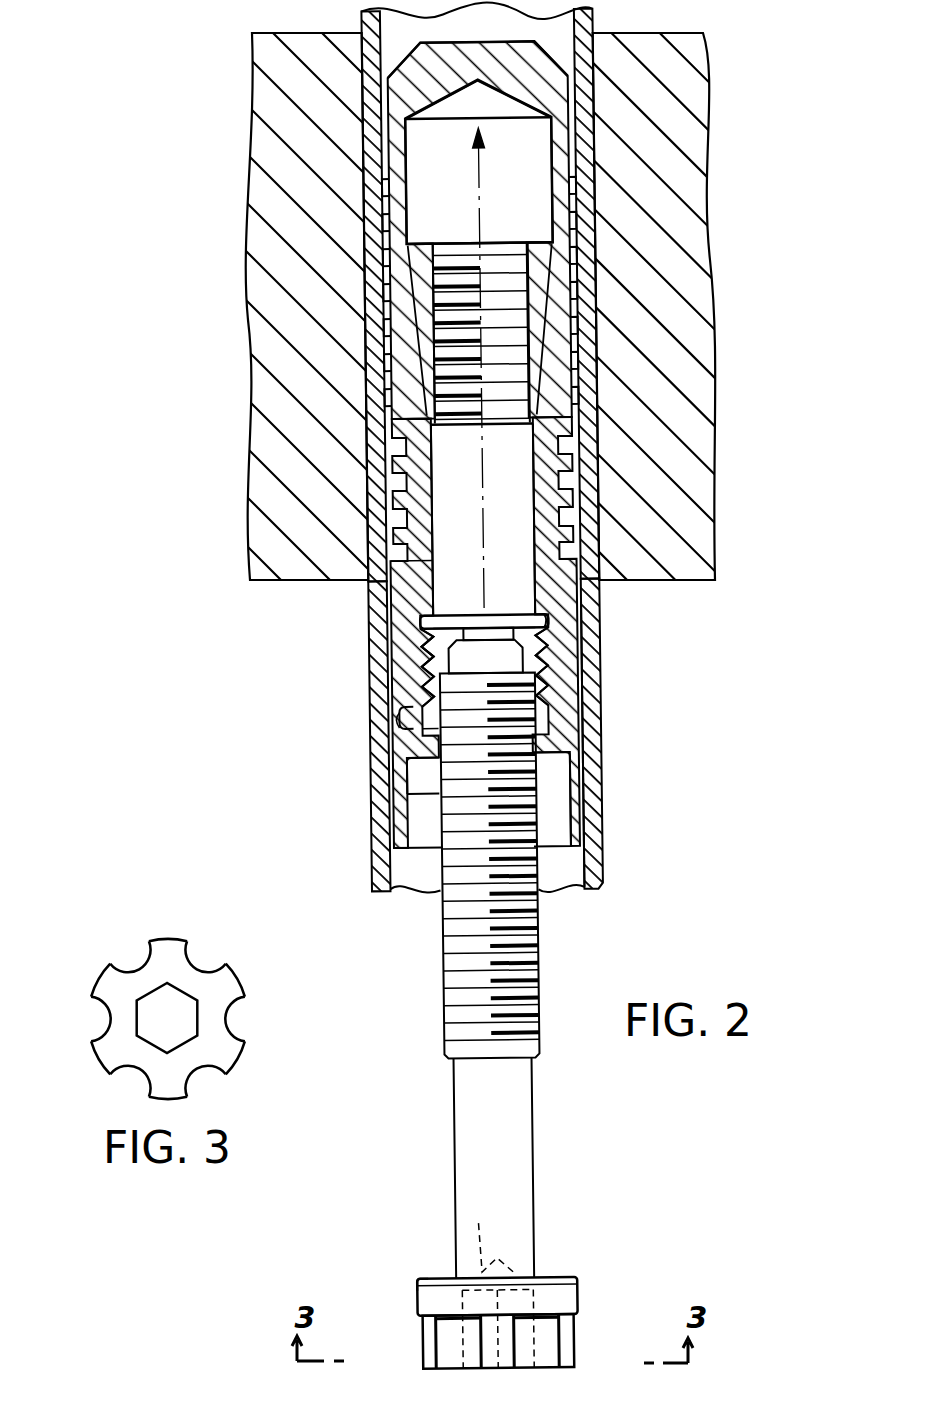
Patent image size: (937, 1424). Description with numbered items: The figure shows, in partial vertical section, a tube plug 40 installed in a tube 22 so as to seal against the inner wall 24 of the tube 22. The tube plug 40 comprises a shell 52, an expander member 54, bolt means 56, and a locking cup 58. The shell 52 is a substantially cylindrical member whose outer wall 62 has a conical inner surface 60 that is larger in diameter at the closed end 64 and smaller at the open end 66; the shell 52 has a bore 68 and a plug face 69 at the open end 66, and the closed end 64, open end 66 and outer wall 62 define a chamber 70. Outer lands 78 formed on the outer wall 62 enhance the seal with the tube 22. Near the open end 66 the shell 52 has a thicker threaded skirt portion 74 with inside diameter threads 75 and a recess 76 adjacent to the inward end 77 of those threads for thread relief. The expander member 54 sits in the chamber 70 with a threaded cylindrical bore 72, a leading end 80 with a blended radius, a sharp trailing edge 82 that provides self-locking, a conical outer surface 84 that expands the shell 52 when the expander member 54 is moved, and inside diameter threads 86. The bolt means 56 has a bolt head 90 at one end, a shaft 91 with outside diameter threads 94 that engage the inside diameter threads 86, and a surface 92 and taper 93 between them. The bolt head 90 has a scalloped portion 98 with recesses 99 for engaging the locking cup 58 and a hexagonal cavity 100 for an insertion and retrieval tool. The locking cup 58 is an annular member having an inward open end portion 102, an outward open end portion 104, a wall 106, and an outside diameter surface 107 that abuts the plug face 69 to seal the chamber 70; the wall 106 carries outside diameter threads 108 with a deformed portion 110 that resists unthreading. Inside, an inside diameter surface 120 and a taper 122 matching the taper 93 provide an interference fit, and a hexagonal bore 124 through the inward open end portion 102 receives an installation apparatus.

In FIG. 2, the tube 22 is at (605, 858).
In FIG. 2, the inner wall 24 is at (580, 863).
In FIG. 2, the tube plug 40 is at (725, 94).
In FIG. 2, the shell 52 is at (464, 42).
In FIG. 2, the expander member 54 is at (552, 246).
In FIG. 2, the bolt means 56 is at (526, 1129).
In FIG. 3, the bolt means 56 is at (98, 1062).
In FIG. 2, the locking cup 58 is at (560, 738).
In FIG. 2, the conical inner surface 60 is at (416, 169).
In FIG. 2, the outer wall 62 is at (389, 96).
In FIG. 2, the closed end 64 is at (405, 69).
In FIG. 2, the open end 66 is at (406, 686).
In FIG. 2, the bore 68 is at (463, 552).
In FIG. 2, the plug face 69 is at (401, 727).
In FIG. 2, the chamber 70 is at (453, 509).
In FIG. 2, the threaded cylindrical bore 72 is at (518, 428).
In FIG. 2, the skirt portion 74 is at (577, 608).
In FIG. 2, the inside diameter threads 75 is at (547, 623).
In FIG. 2, the recess 76 is at (423, 622).
In FIG. 2, the inward end 77 is at (427, 629).
In FIG. 2, the outer lands 78 is at (391, 211).
In FIG. 2, the leading end 80 is at (434, 426).
In FIG. 2, the trailing edge 82 is at (422, 239).
In FIG. 2, the conical outer surface 84 is at (581, 274).
In FIG. 2, the inside diameter threads 86 is at (523, 348).
In FIG. 2, the bolt head 90 is at (562, 1299).
In FIG. 3, the bolt head 90 is at (98, 980).
In FIG. 2, the shaft 91 is at (533, 933).
In FIG. 2, the surface 92 is at (539, 1274).
In FIG. 2, the taper 93 is at (412, 1276).
In FIG. 2, the outside diameter threads 94 is at (532, 1009).
In FIG. 2, the scalloped portion 98 is at (559, 1373).
In FIG. 3, the scalloped portion 98 is at (237, 977).
In FIG. 2, the recess 99 is at (441, 1342).
In FIG. 3, the recess 99 is at (240, 1025).
In FIG. 2, the cavity 100 is at (470, 1232).
In FIG. 3, the cavity 100 is at (157, 983).
In FIG. 2, the inward open end portion 102 is at (422, 666).
In FIG. 2, the outward open end portion 104 is at (400, 836).
In FIG. 2, the wall 106 is at (571, 783).
In FIG. 2, the outside diameter surface 107 is at (401, 711).
In FIG. 2, the outside diameter threads 108 is at (411, 692).
In FIG. 2, the deformed portion 110 is at (549, 644).
In FIG. 2, the inside diameter surface 120 is at (402, 812).
In FIG. 2, the taper 122 is at (415, 776).
In FIG. 2, the hexagonal bore 124 is at (450, 628).